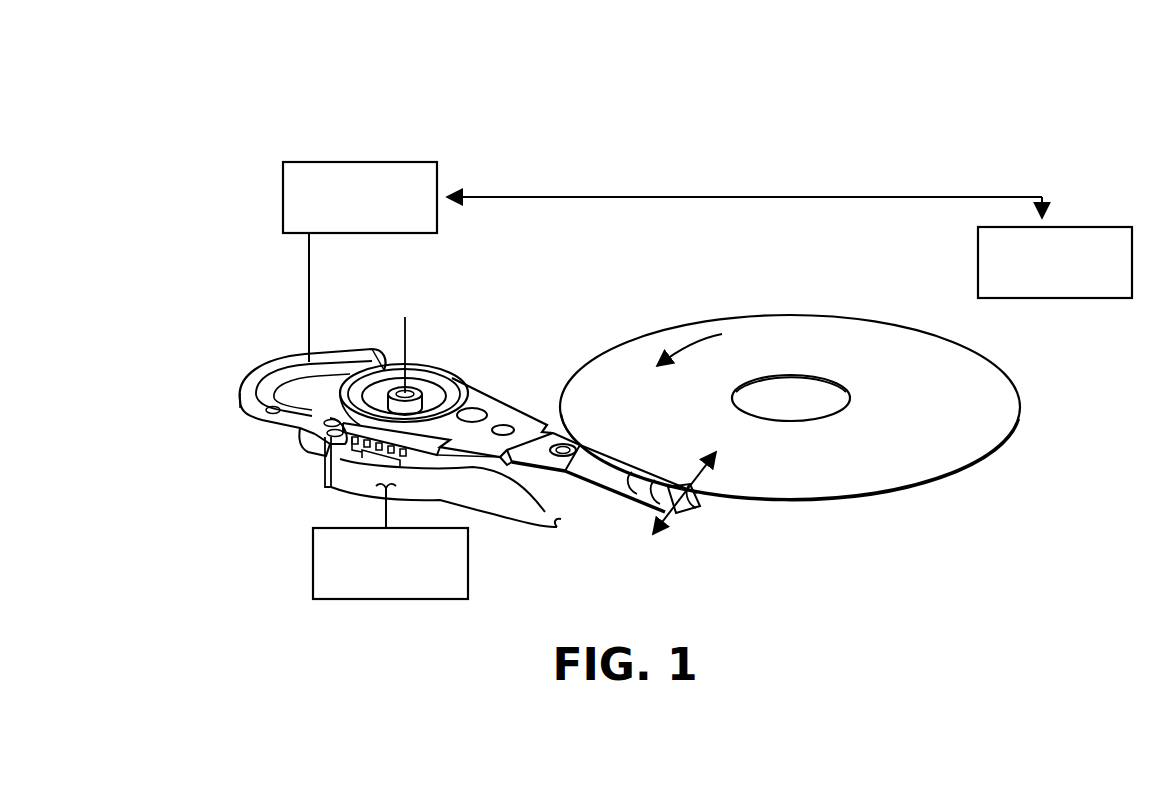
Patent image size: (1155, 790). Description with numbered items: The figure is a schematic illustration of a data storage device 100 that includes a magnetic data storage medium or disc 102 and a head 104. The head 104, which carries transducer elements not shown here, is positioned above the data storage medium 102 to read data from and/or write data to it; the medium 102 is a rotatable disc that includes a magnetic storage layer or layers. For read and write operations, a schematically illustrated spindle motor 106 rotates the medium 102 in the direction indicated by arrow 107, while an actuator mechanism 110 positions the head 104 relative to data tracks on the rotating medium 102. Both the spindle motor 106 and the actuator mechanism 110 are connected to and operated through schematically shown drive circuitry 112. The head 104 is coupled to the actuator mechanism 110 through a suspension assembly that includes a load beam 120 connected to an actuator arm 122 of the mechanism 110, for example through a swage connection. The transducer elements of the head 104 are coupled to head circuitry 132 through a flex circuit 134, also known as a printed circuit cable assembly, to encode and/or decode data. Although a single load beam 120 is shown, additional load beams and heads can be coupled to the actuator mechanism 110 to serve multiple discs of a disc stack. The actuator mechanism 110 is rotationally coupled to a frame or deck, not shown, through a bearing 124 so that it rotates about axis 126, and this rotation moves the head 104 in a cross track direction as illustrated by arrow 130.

The data storage device 100 is at (932, 156).
The magnetic data storage medium or disc 102 is at (891, 350).
The head 104 is at (692, 503).
The spindle motor 106 is at (1097, 227).
The arrow 107 is at (683, 347).
The actuator mechanism 110 is at (427, 350).
The drive circuitry 112 is at (405, 162).
The load beam 120 is at (592, 466).
The actuator arm 122 is at (508, 392).
The bearing 124 is at (398, 390).
The axis 126 is at (403, 337).
The arrow 130 is at (703, 480).
The head circuitry 132 is at (313, 560).
The flex circuit 134 is at (414, 495).